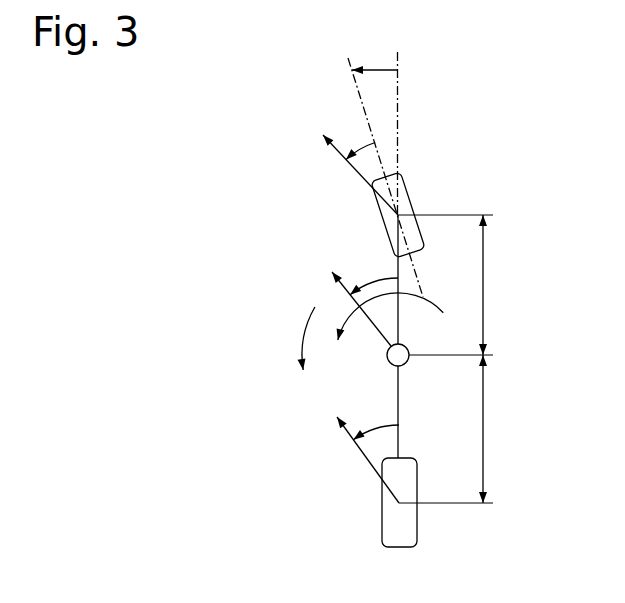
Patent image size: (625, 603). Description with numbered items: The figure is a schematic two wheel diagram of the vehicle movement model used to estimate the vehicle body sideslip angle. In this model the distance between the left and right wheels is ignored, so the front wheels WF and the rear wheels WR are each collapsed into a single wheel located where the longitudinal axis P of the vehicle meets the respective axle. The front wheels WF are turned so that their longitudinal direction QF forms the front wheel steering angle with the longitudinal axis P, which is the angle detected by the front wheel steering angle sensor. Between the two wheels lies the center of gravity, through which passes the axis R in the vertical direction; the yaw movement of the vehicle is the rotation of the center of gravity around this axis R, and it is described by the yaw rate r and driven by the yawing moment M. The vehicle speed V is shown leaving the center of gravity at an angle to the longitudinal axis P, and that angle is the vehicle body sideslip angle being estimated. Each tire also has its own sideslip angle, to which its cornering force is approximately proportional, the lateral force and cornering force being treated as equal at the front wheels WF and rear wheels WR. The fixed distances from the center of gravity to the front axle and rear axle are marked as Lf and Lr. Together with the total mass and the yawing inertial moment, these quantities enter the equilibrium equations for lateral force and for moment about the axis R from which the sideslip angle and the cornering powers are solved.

The longitudinal axis of the vehicle P is at (398, 102).
The longitudinal direction of the front wheels QF is at (350, 72).
The front wheels WF is at (410, 188).
The vehicle speed V is at (356, 297).
The yaw rate r is at (388, 316).
The yawing moment M is at (299, 338).
The axis in the vertical direction of the center of gravity R is at (405, 364).
The distance from the center of gravity to the front axle Lf is at (453, 285).
The distance from the center of gravity to the rear axle Lr is at (453, 429).
The rear wheels WR is at (417, 517).